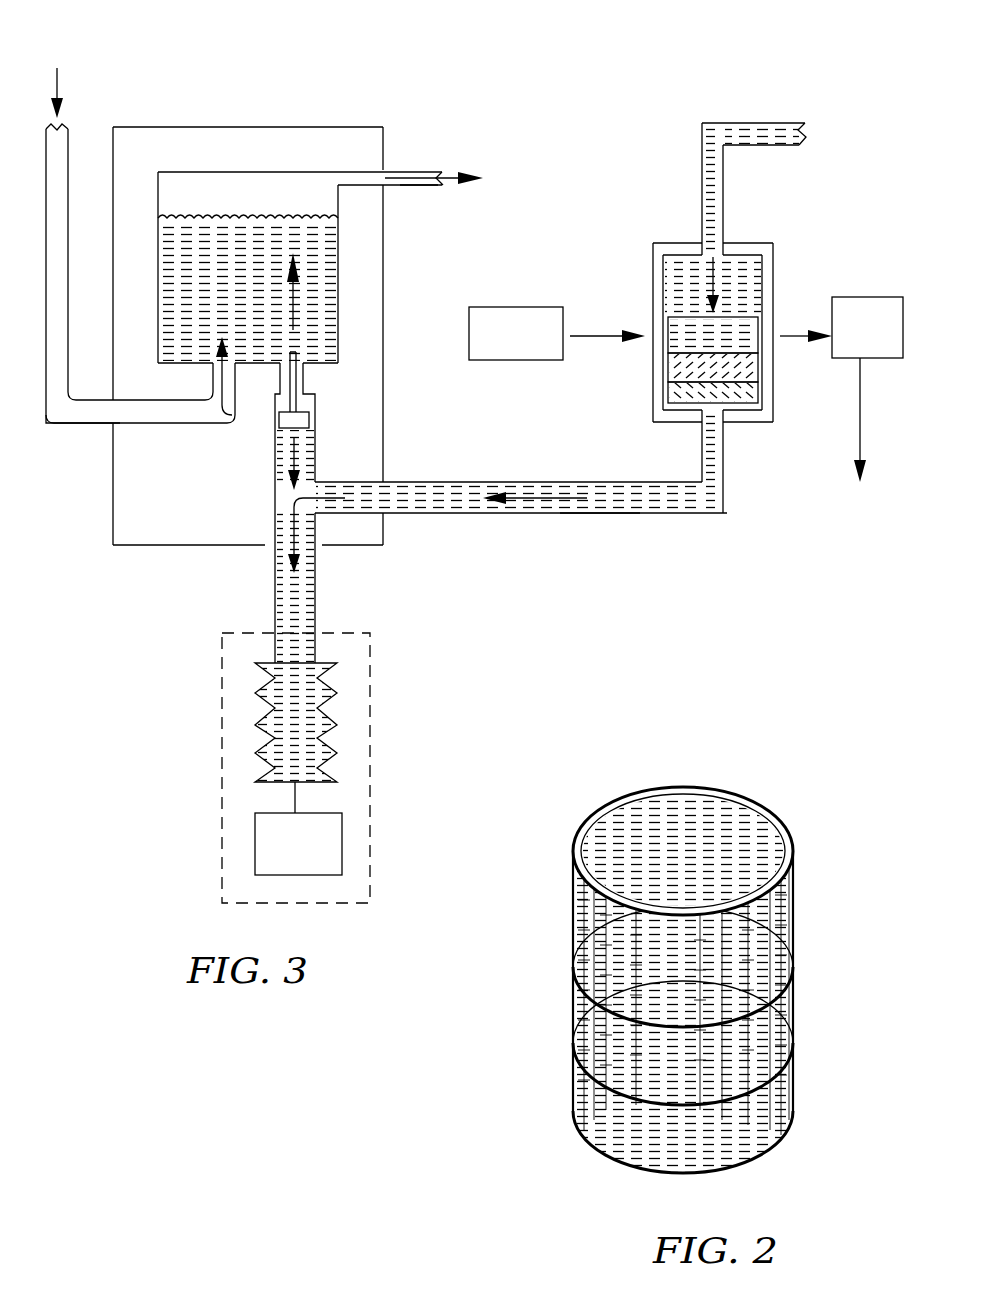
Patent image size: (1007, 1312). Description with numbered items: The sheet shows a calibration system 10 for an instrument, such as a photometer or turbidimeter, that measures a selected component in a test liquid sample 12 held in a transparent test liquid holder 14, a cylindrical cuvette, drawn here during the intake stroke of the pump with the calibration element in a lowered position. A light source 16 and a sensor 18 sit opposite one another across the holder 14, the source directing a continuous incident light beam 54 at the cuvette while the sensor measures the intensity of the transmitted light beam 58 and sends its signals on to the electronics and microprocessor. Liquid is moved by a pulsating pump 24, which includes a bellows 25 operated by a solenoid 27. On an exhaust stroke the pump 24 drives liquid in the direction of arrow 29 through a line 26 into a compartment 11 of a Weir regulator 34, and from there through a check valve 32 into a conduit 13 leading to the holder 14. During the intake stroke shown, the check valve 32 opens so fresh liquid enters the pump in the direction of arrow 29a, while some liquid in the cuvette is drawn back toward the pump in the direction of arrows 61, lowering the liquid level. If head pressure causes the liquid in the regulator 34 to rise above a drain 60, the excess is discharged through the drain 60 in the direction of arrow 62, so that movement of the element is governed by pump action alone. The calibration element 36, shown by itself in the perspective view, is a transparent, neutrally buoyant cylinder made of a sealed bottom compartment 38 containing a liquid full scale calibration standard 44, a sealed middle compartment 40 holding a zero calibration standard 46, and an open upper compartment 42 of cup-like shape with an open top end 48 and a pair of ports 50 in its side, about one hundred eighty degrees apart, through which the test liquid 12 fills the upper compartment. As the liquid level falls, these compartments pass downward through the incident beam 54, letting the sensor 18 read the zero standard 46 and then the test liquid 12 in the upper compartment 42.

In FIG. 3, the calibration system 10 is at (196, 82).
In FIG. 3, the compartment 11 is at (172, 205).
In FIG. 2, the test liquid sample 12 is at (618, 870).
In FIG. 3, the conduit 13 is at (578, 513).
In FIG. 3, the test liquid holder 14 is at (775, 265).
In FIG. 3, the light source 16 is at (508, 362).
In FIG. 3, the sensor 18 is at (870, 298).
In FIG. 3, the pulsating pump 24 is at (218, 802).
In FIG. 3, the bellows 25 is at (320, 698).
In FIG. 3, the line 26 is at (100, 425).
In FIG. 3, the solenoid 27 is at (343, 847).
In FIG. 3, the arrow 29 is at (58, 82).
In FIG. 3, the arrow 29a is at (297, 466).
In FIG. 3, the check valve 32 is at (290, 357).
In FIG. 3, the Weir regulator 34 is at (290, 127).
In FIG. 3, the calibration element 36 is at (723, 313).
In FIG. 2, the calibration element 36 is at (580, 1041).
In FIG. 2, the sealed bottom compartment 38 is at (781, 1092).
In FIG. 3, the sealed middle compartment 40 is at (758, 373).
In FIG. 2, the sealed middle compartment 40 is at (777, 1024).
In FIG. 3, the open upper compartment 42 is at (668, 323).
In FIG. 2, the open upper compartment 42 is at (781, 882).
In FIG. 2, the full scale calibration standard 44 is at (612, 1113).
In FIG. 3, the zero calibration standard 46 is at (693, 367).
In FIG. 2, the zero calibration standard 46 is at (592, 1016).
In FIG. 2, the open top end 48 is at (700, 799).
In FIG. 2, the ports 50 is at (578, 907).
In FIG. 3, the incident light beam 54 is at (590, 336).
In FIG. 3, the transmitted light beam 58 is at (793, 331).
In FIG. 3, the drain 60 is at (418, 172).
In FIG. 3, the arrows 61 is at (347, 499).
In FIG. 3, the arrow 62 is at (418, 187).